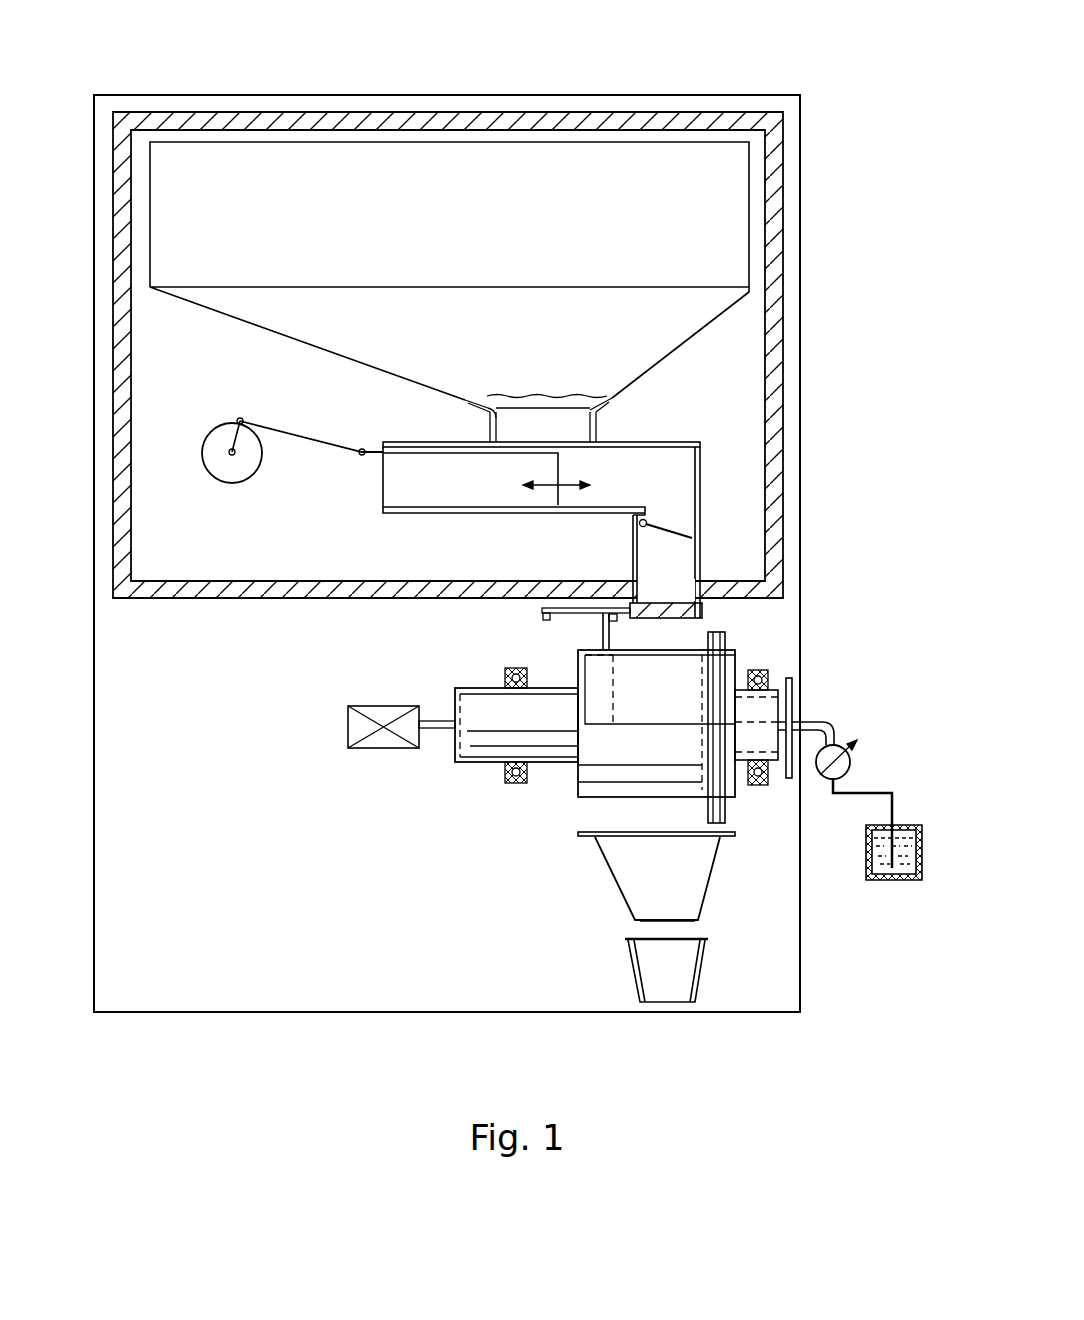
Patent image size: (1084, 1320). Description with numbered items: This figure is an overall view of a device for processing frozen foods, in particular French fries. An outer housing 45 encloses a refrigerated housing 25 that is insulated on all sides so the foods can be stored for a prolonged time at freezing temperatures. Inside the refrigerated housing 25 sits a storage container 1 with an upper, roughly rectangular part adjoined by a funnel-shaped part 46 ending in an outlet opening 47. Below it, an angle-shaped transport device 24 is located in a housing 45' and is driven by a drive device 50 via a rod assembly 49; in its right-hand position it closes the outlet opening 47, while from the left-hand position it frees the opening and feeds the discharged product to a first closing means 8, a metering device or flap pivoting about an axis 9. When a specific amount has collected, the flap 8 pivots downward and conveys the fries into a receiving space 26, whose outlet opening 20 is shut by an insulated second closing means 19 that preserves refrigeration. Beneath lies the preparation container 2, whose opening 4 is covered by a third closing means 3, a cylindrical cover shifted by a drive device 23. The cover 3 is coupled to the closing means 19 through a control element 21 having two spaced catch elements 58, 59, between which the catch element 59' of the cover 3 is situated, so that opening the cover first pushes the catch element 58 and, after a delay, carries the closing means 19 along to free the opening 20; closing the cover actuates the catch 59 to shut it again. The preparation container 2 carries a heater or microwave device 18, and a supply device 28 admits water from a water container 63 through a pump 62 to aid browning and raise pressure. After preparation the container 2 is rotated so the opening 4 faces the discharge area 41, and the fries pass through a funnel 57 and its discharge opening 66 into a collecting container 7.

The storage container 1 is at (449, 240).
The preparation container 2 is at (560, 785).
The third closing means (cover) 3 is at (667, 708).
The opening 4 is at (672, 667).
The collecting container 7 is at (652, 967).
The first closing means (metering device, flap, scales) 8 is at (660, 527).
The axis 9 is at (645, 527).
The heater or microwave device 18 is at (736, 806).
The second closing means 19 is at (690, 610).
The outlet opening of receiving space 20 is at (665, 597).
The control element (automatic guide) 21 is at (573, 617).
The drive device 23 is at (217, 470).
The transport device (conveyor belt) 24 is at (423, 457).
The insulated or refrigerated housing 25 is at (775, 365).
The receiving space 26 is at (675, 563).
The supply device for water or another liquid 28 is at (865, 708).
The discharge area 41 is at (632, 802).
The housing 45 is at (471, 506).
The housing 45' is at (554, 501).
The funnel-shaped part 46 is at (497, 366).
The outlet opening 47 is at (568, 428).
The rod assembly 49 is at (312, 434).
The drive device 50 is at (229, 416).
The funnel 57 is at (632, 882).
The catch element 58 is at (543, 616).
The catch element 59 is at (635, 632).
The catch element 59' is at (575, 640).
The pump 62 is at (845, 767).
The water container 63 is at (866, 853).
The discharge opening of the funnel 66 is at (675, 922).